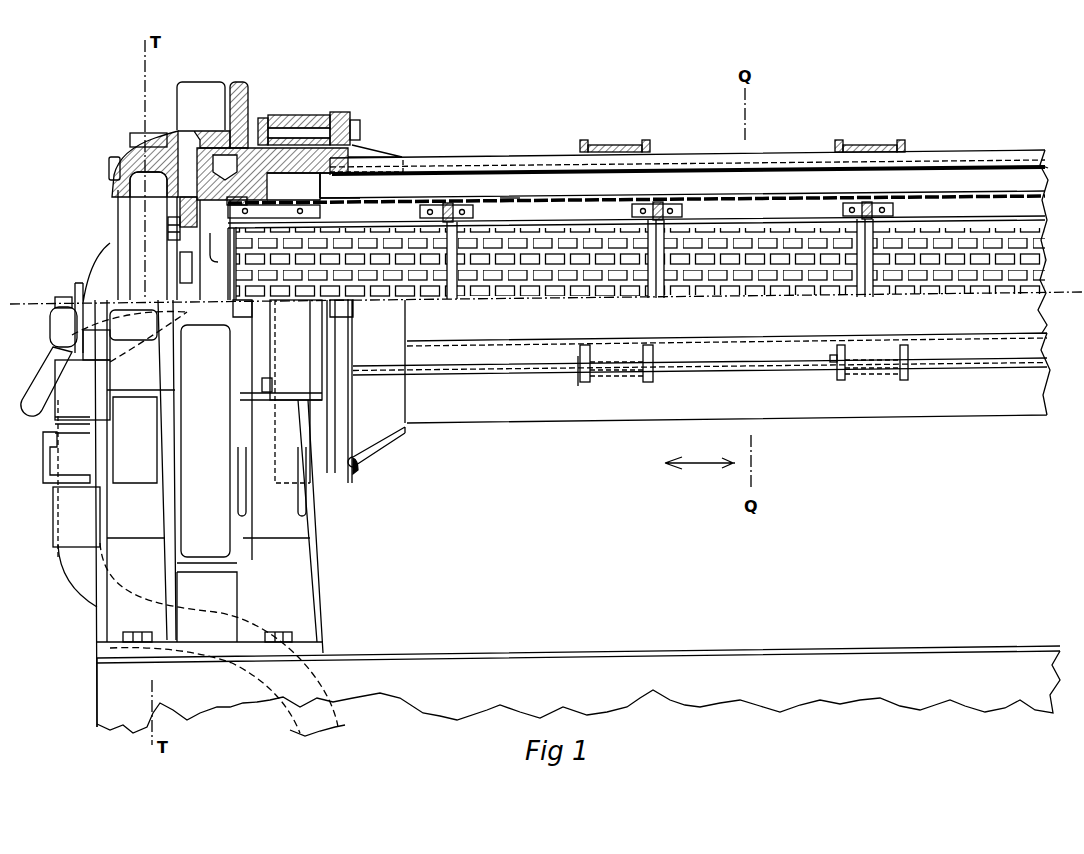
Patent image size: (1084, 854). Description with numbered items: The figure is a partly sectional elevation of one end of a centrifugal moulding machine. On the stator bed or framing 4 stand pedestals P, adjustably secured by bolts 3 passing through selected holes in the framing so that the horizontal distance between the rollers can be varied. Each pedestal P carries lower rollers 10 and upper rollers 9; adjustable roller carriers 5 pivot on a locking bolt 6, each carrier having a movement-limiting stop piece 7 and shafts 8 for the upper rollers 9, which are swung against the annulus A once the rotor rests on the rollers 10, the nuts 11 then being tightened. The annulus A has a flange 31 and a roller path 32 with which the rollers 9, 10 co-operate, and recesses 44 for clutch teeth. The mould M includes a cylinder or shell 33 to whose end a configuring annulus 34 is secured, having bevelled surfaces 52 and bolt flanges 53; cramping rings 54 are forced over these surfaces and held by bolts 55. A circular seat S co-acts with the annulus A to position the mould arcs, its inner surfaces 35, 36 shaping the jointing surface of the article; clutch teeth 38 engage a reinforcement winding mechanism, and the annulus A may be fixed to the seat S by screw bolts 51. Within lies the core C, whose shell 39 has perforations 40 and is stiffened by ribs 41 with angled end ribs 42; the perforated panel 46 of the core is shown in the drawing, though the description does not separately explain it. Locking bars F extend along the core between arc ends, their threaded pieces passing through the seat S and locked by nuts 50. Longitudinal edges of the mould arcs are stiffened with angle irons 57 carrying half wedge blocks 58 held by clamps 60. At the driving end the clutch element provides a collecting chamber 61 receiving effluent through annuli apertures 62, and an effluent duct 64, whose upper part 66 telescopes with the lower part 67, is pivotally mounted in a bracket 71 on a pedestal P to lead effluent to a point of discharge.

The bolts 3 is at (138, 633).
The stator bed or framing 4 is at (578, 691).
The adjustable roller carriers 5 is at (133, 142).
The locking bolt 6 is at (48, 326).
The movement-limiting stop piece 7 is at (120, 335).
The shafts 8 is at (108, 170).
The upper rollers 9 is at (189, 92).
The lower rollers 10 is at (205, 441).
The nuts 11 is at (60, 300).
The flange 31 is at (250, 90).
The roller path 32 is at (198, 130).
The cylinder 33 is at (422, 199).
The configuring annulus 34 is at (324, 176).
The inner surface of seat 35 is at (282, 182).
The inner surface of seat 36 is at (256, 186).
The clutch teeth 38 is at (222, 248).
The shell 39 is at (503, 199).
The perforations 40 is at (568, 198).
The ribs 41 is at (455, 299).
The angled end ribs 42 is at (273, 209).
The recesses 44 is at (178, 266).
The perforated screen 46 is at (1038, 268).
The nuts 50 is at (180, 208).
The screw bolts 51 is at (168, 229).
The bevelled surfaces 52 is at (300, 130).
The bolt flanges 53 is at (340, 112).
The cramping rings 54 is at (268, 118).
The bolts 55 is at (356, 122).
The angle irons 57 is at (468, 158).
The half wedge blocks 58 is at (578, 361).
The clamps 60 is at (614, 387).
The collecting chamber 61 is at (147, 236).
The annuli apertures 62 is at (188, 199).
The effluent ducts 64 is at (76, 592).
The upper part of duct 66 is at (82, 460).
The lower part of duct 67 is at (76, 517).
The bracket 71 is at (48, 476).
The annulus A is at (182, 131).
The core C is at (1040, 200).
The locking bars F is at (1040, 220).
The mould M is at (1052, 166).
The pedestals P is at (209, 513).
The circular seat S is at (234, 263).